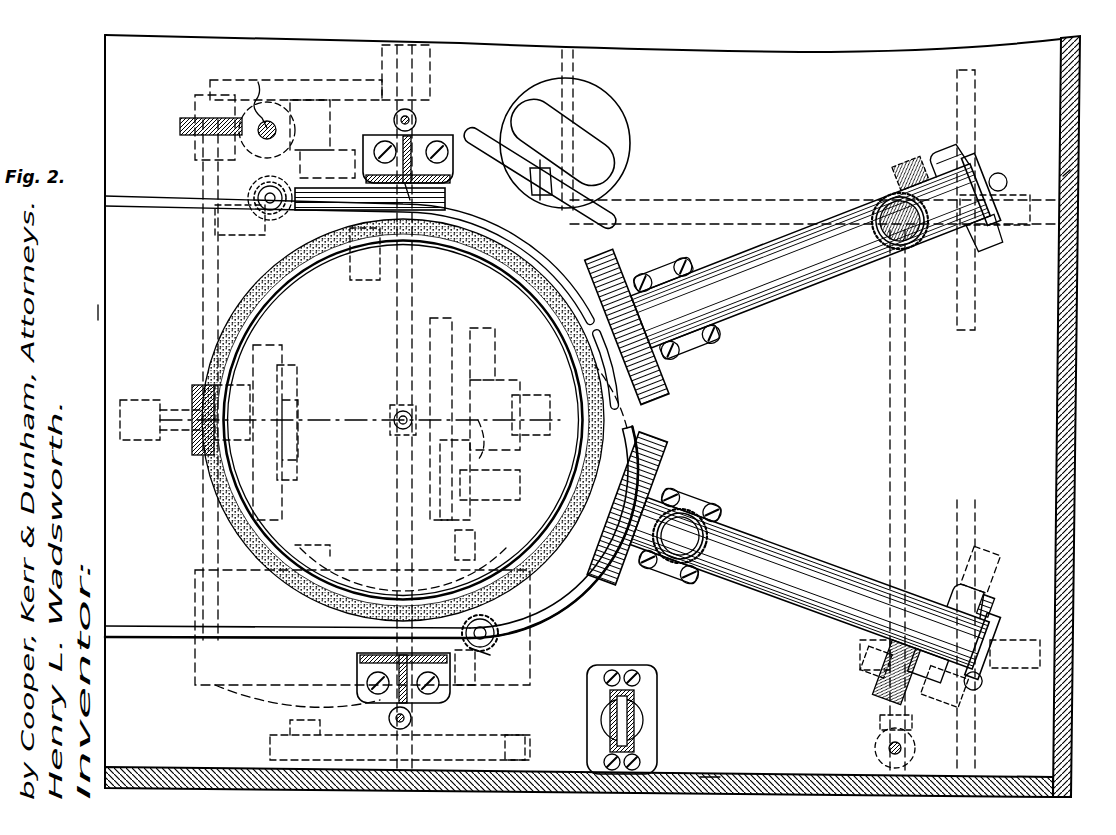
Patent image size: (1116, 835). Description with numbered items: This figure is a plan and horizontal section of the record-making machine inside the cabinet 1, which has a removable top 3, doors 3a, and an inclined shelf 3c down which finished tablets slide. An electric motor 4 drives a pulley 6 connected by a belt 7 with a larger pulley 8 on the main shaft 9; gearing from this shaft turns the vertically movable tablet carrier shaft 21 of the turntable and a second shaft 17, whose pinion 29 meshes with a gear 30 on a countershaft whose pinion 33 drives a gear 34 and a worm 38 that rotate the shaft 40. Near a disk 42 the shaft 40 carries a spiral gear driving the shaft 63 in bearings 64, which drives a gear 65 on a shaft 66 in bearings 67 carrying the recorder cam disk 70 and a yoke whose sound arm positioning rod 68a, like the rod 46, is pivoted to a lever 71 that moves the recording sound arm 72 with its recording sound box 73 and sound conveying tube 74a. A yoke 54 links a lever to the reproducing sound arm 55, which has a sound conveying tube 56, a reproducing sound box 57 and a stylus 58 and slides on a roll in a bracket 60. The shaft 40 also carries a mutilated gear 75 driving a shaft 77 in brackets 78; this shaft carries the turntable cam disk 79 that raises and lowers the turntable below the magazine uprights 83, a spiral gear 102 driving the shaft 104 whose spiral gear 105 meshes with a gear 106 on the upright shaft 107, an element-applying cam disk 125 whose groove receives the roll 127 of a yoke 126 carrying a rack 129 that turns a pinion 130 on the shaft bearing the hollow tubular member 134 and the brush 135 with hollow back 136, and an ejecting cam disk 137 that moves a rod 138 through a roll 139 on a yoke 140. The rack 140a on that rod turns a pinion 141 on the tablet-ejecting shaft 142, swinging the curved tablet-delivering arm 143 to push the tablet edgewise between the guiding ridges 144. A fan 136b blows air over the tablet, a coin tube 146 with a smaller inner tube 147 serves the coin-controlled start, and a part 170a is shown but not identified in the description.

The case or cabinet 1 is at (1061, 370).
The top 3 is at (1065, 178).
The doors 3a is at (690, 782).
The inclined shelf 3c is at (105, 312).
The electric motor 4 is at (222, 675).
The pulley 6 is at (272, 738).
The belt 7 is at (374, 745).
The larger pulley 8 is at (528, 745).
The main shaft 9 is at (395, 548).
The second shaft 17 is at (414, 294).
The tablet carrier shaft 21 is at (396, 430).
The pinion 29 is at (432, 92).
The gear 30 is at (342, 90).
The pinion 33 is at (312, 128).
The gear 34 is at (418, 118).
The worm 38 is at (352, 250).
The shaft 40 is at (758, 210).
The disk 42 is at (966, 318).
The rod 46 is at (1004, 178).
The yoke 54 is at (944, 158).
The reproducing sound arm 55 is at (818, 276).
The sound conveying tube 56 is at (885, 203).
The reproducing sound box 57 is at (668, 386).
The stylus 58 is at (660, 366).
The bracket 60 is at (710, 350).
The shaft 63 is at (905, 490).
The bearings 64 is at (888, 183).
The gear 65 is at (905, 680).
The shaft 66 is at (855, 662).
The bearings 67 is at (1010, 642).
The sound arm positioning rod 68a is at (1000, 680).
The recorder cam disk 70 is at (978, 562).
The lever 71 is at (958, 560).
The recording sound arm 72 is at (808, 570).
The recording sound box 73 is at (650, 470).
The sound conveying tube 74a is at (712, 536).
The mutilated gear 75 is at (575, 72).
The shaft 77 is at (522, 420).
The brackets 78 is at (630, 418).
The turntable cam disk 79 is at (448, 326).
The uprights 83 is at (453, 170).
The spiral gear 102 is at (200, 445).
The shaft 104 is at (203, 292).
The spiral gear 105 is at (190, 135).
The spiral gear 106 is at (258, 155).
The upright shaft 107 is at (250, 94).
The element-applying actuating cam disk 125 is at (287, 498).
The yoke 126 is at (240, 460).
The roll 127 is at (285, 455).
The rack 129 is at (230, 230).
The pinion 130 is at (245, 188).
The hollow tubular member 134 is at (283, 214).
The brush 135 is at (440, 195).
The hollow back 136 is at (340, 202).
The fan 136b is at (610, 218).
The ejecting cam disk 137 is at (495, 338).
The rod 138 is at (474, 533).
The roll 139 is at (488, 440).
The yoke 140 is at (470, 480).
The rack 140a is at (475, 668).
The pinion 141 is at (488, 655).
The tablet-ejecting shaft 142 is at (500, 640).
The curved tablet-delivering arm 143 is at (566, 590).
The ridge 144 is at (160, 200).
The tube 146 is at (630, 700).
The second tube 147 is at (640, 720).
The block 170a is at (540, 470).